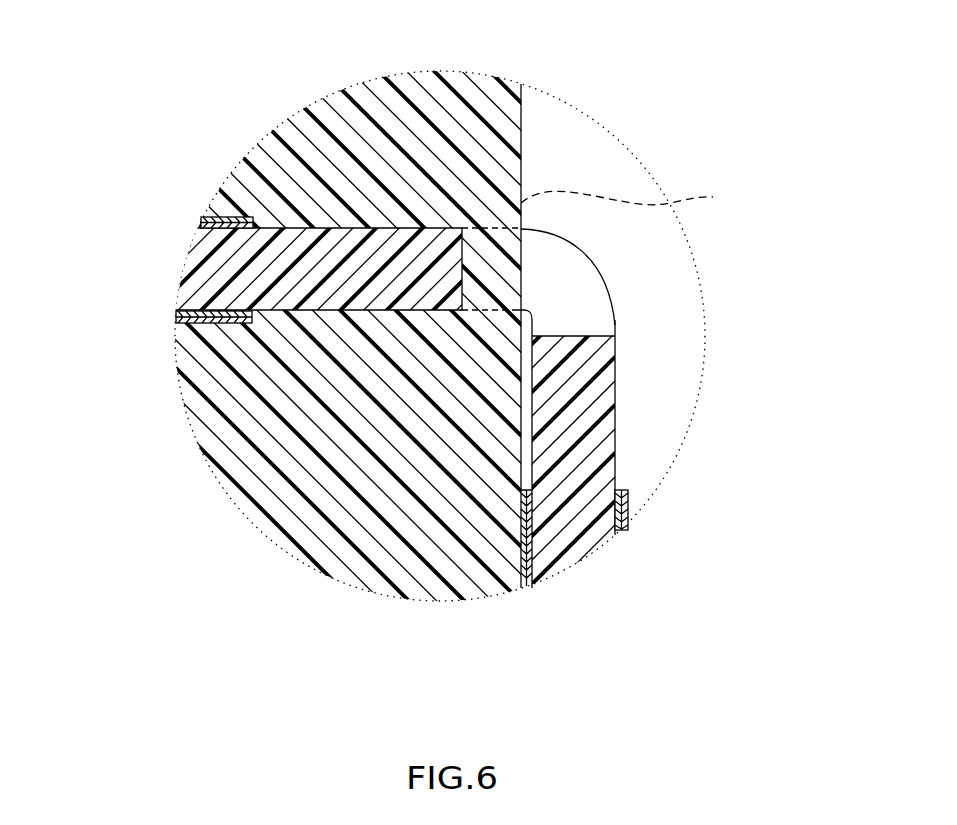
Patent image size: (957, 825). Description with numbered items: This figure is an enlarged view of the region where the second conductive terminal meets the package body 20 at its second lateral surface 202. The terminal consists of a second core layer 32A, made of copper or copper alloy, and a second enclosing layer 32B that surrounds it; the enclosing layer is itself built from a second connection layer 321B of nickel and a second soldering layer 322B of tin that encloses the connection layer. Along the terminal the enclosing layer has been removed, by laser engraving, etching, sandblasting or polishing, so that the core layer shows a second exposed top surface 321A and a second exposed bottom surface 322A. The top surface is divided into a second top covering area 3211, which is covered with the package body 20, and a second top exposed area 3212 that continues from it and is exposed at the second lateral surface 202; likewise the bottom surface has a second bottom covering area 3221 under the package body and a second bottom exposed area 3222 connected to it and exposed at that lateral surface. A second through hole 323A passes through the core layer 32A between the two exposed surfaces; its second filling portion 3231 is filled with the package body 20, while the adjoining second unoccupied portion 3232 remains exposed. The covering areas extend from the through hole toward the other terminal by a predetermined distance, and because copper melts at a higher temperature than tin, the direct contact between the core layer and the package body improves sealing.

The package body 20 is at (416, 100).
The second lateral surface 202 is at (524, 118).
The second core layer 32A is at (483, 314).
The second enclosing layer 32B is at (341, 435).
The second exposed top surface 321A is at (483, 314).
The second top covering area 3211 is at (297, 226).
The second top exposed area 3212 is at (616, 389).
The second exposed bottom surface 322A is at (478, 379).
The second bottom covering area 3221 is at (303, 313).
The second bottom exposed area 3222 is at (520, 452).
The second connection layer 321B is at (212, 225).
The second soldering layer 322B is at (221, 222).
The second through hole 323A is at (679, 254).
The second filling portion 3231 is at (643, 198).
The second unoccupied portion 3232 is at (583, 301).